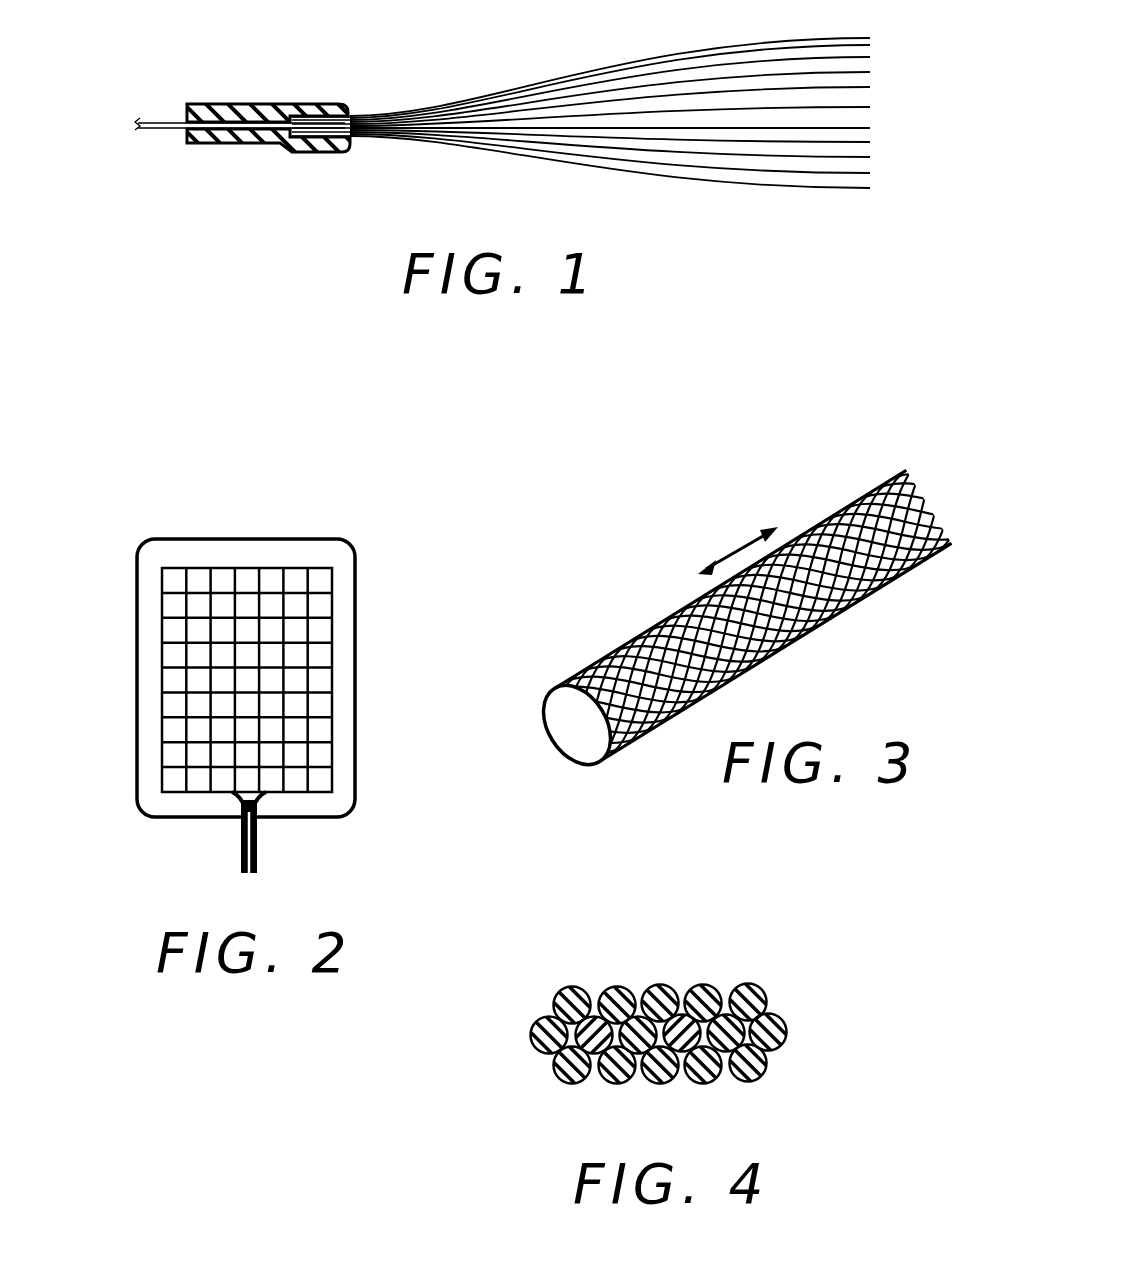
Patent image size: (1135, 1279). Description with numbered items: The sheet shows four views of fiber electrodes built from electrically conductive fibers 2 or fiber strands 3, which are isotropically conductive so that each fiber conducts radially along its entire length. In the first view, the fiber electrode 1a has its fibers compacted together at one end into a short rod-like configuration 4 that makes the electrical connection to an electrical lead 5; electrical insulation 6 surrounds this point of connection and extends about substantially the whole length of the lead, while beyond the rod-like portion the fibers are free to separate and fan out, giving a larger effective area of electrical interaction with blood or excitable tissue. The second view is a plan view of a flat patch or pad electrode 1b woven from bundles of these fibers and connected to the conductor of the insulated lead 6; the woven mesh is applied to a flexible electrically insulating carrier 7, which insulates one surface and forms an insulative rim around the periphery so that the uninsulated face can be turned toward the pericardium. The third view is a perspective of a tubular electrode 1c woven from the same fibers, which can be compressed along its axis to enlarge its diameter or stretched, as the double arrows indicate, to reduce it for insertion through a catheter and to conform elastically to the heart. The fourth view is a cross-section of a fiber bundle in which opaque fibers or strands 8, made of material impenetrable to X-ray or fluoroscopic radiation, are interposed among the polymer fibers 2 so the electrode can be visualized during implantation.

In FIG. 1, the fiber electrode 1a is at (283, 78).
In FIG. 2, the patch or pad electrode 1b is at (266, 522).
In FIG. 3, the tubular electrode 1c is at (838, 494).
In FIG. 1, the electrically conductive fibers 2 is at (660, 65).
In FIG. 2, the electrically conductive fibers 2 is at (331, 618).
In FIG. 3, the electrically conductive fibers 2 is at (630, 655).
In FIG. 4, the electrically conductive fibers 2 is at (617, 1000).
In FIG. 1, the fiber strands 3 is at (610, 94).
In FIG. 2, the fiber strands 3 is at (306, 680).
In FIG. 3, the fiber strands 3 is at (615, 593).
In FIG. 4, the fiber strands 3 is at (716, 985).
In FIG. 1, the rod-like configuration 4 is at (383, 115).
In FIG. 1, the electrical lead 5 is at (165, 132).
In FIG. 1, the electrical insulation 6 is at (227, 104).
In FIG. 2, the electrical insulation 6 is at (238, 845).
In FIG. 2, the electrically insulating carrier 7 is at (138, 622).
In FIG. 4, the opaque fibers or strands 8 is at (685, 1052).